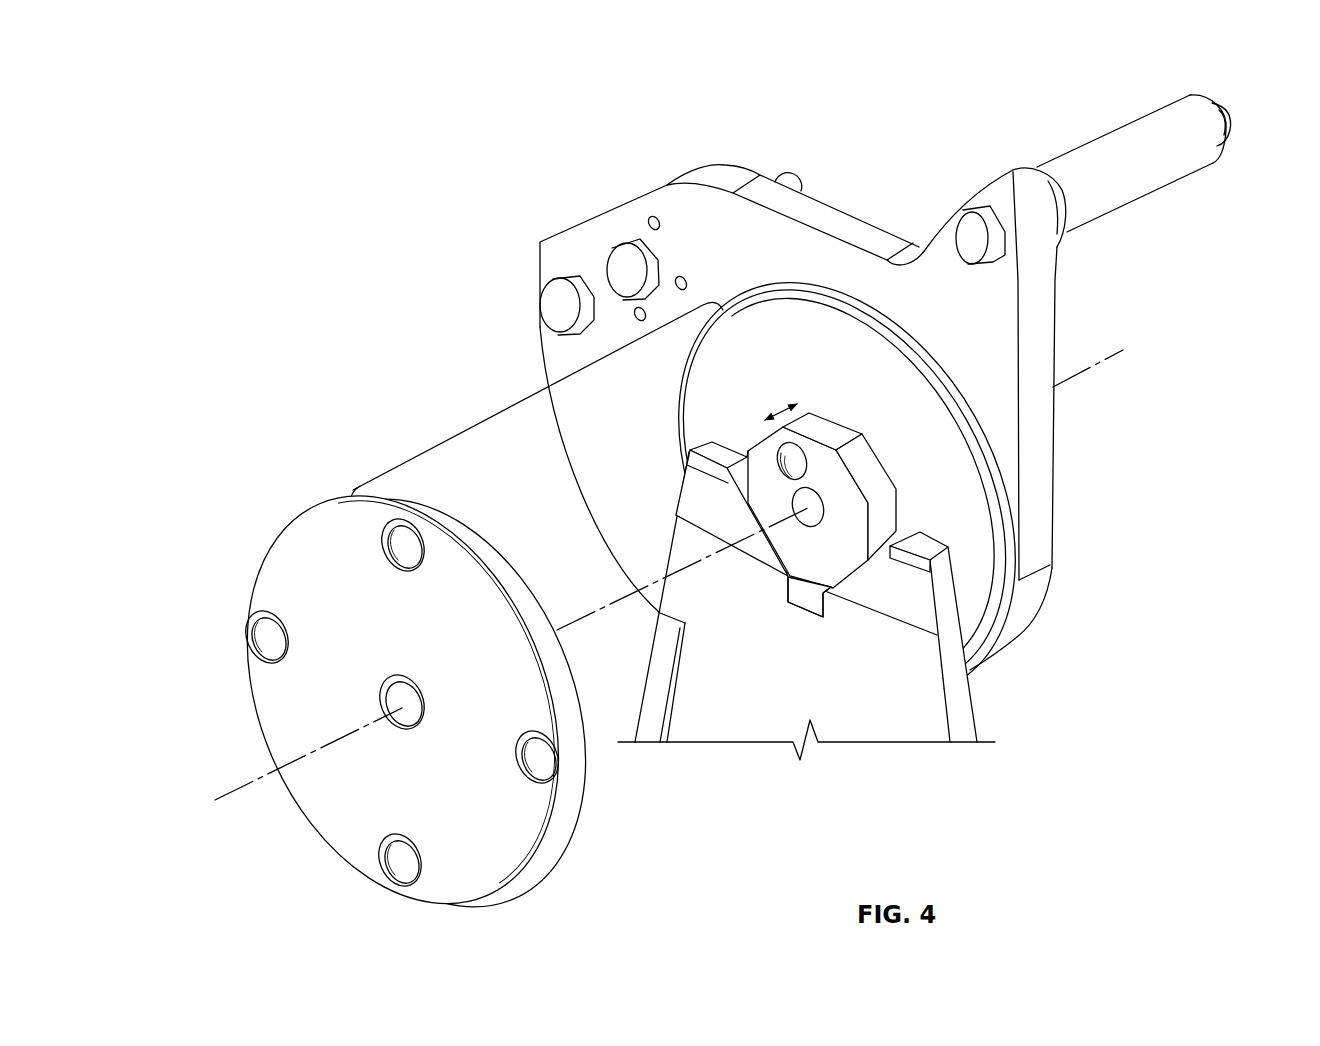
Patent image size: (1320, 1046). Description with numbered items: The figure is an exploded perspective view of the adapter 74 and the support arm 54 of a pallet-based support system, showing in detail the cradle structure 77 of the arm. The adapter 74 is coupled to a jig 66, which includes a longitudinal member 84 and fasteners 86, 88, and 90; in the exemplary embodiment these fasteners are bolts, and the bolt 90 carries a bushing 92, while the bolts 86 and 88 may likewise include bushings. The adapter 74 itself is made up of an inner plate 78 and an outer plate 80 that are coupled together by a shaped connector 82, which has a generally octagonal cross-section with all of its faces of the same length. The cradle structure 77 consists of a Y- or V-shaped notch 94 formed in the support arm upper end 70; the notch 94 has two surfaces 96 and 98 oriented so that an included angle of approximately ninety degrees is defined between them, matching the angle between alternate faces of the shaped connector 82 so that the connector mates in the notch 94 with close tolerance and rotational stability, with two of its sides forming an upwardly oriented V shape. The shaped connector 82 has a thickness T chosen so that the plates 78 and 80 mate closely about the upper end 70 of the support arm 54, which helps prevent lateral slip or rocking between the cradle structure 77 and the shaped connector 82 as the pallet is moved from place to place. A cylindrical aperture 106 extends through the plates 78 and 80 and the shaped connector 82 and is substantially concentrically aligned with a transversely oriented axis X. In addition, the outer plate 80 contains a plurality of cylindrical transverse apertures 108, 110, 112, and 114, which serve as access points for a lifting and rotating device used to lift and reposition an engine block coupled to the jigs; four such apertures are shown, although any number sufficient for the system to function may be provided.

The jig 66 is at (537, 172).
The fastener 88 is at (620, 268).
The fastener 86 is at (560, 310).
The fastener 90 is at (958, 239).
The bushing 92 is at (1100, 132).
The longitudinal member 84 is at (862, 417).
The adapter 74 is at (542, 383).
The inner plate 78 is at (987, 467).
The shaped connector 82 is at (827, 432).
The surface 96 is at (740, 477).
The cradle structure 77 is at (700, 490).
The surface 98 is at (902, 540).
The notch 94 is at (808, 589).
The support arm upper end 70 is at (806, 628).
The support arm 54 is at (743, 730).
The outer plate 80 is at (533, 835).
The cylindrical aperture 106 is at (412, 710).
The transverse aperture 108 is at (400, 878).
The transverse aperture 110 is at (548, 760).
The transverse aperture 112 is at (417, 510).
The transverse aperture 114 is at (273, 653).
The thickness T is at (766, 418).
The axis X is at (215, 798).